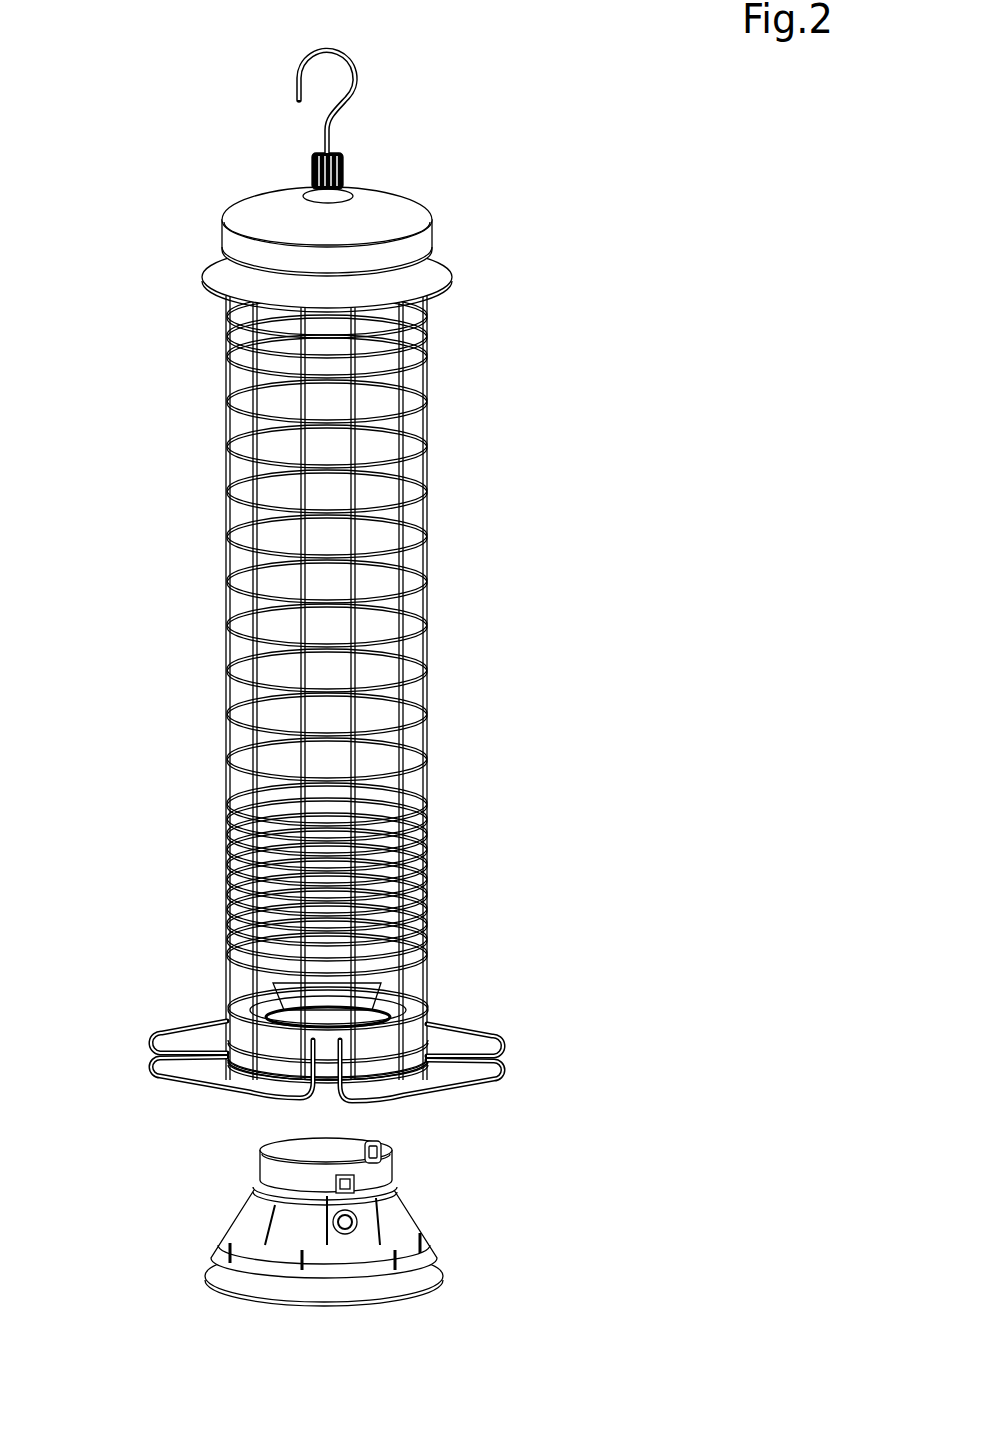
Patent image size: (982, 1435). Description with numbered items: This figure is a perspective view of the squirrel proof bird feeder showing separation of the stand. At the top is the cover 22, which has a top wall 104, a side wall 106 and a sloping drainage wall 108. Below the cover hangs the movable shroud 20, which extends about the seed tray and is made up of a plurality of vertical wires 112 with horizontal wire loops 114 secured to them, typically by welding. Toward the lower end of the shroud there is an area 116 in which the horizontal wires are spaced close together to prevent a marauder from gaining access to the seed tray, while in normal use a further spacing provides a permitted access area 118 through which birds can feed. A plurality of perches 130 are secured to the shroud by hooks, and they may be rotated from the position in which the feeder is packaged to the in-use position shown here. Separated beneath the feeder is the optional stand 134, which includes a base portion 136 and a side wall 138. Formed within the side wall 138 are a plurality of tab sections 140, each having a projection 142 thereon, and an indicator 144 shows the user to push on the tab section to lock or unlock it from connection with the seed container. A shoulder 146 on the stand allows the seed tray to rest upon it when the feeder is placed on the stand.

The movable shroud 20 is at (466, 697).
The cover 22 is at (431, 148).
The top wall 104 is at (392, 234).
The side wall 106 is at (432, 240).
The sloping drainage wall 108 is at (437, 262).
The vertical wires 112 is at (355, 539).
The horizontal wire loops 114 is at (380, 503).
The area 116 is at (454, 921).
The permitted access area 118 is at (456, 996).
The perches 130 is at (177, 1030).
The stand 134 is at (219, 1180).
The base portion 136 is at (428, 1267).
The side wall 138 is at (398, 1210).
The tab sections 140 is at (378, 1145).
The projection 142 is at (337, 1182).
The indicator 144 is at (352, 1232).
The shoulder 146 is at (393, 1178).